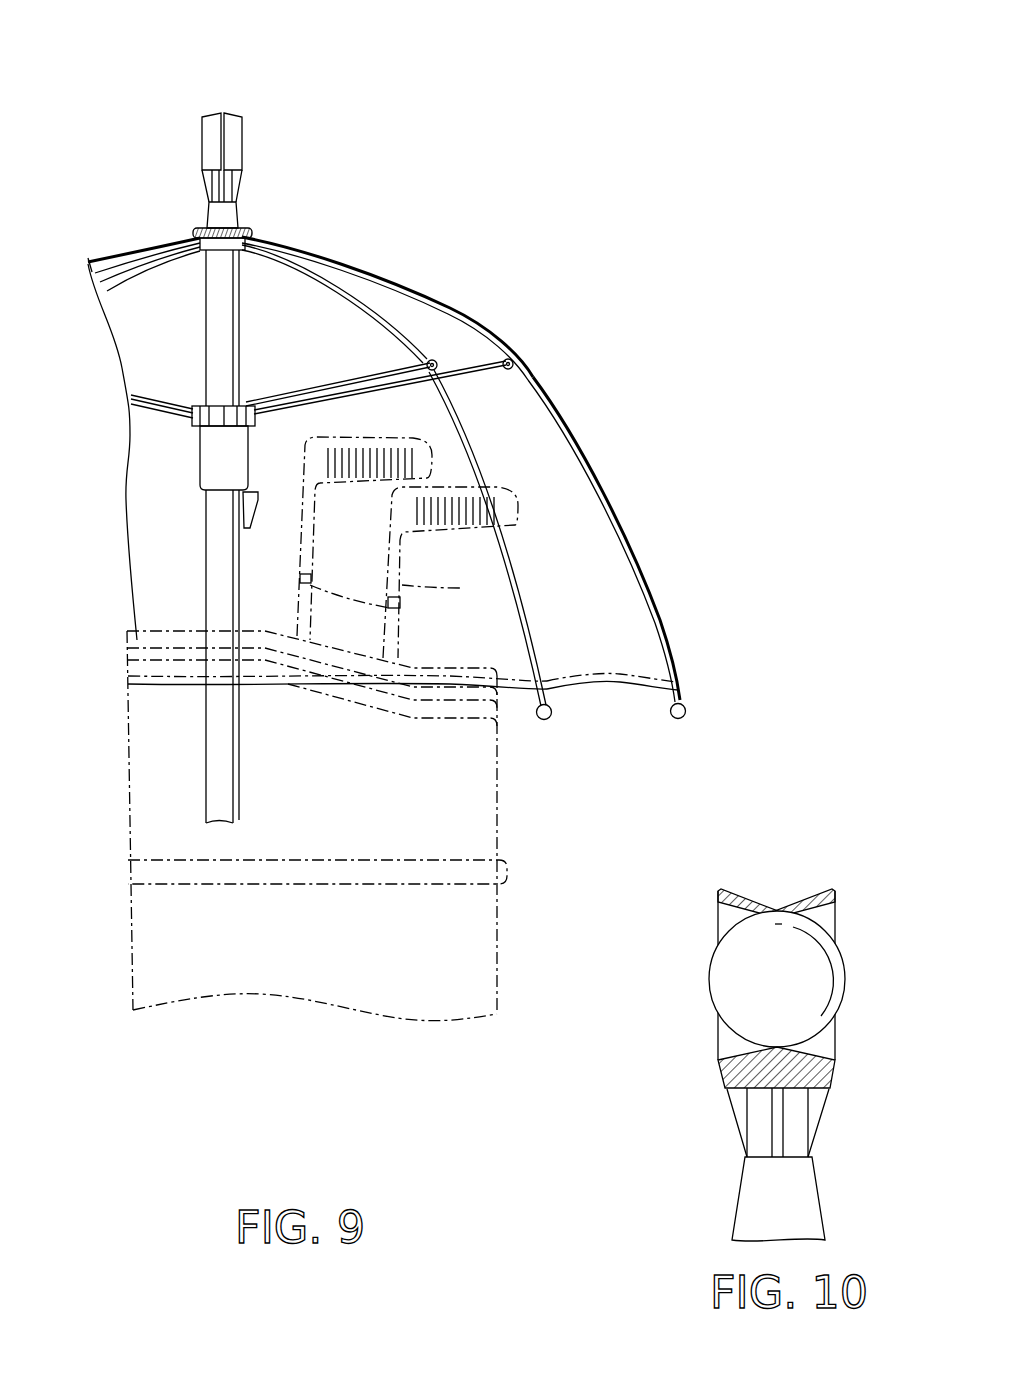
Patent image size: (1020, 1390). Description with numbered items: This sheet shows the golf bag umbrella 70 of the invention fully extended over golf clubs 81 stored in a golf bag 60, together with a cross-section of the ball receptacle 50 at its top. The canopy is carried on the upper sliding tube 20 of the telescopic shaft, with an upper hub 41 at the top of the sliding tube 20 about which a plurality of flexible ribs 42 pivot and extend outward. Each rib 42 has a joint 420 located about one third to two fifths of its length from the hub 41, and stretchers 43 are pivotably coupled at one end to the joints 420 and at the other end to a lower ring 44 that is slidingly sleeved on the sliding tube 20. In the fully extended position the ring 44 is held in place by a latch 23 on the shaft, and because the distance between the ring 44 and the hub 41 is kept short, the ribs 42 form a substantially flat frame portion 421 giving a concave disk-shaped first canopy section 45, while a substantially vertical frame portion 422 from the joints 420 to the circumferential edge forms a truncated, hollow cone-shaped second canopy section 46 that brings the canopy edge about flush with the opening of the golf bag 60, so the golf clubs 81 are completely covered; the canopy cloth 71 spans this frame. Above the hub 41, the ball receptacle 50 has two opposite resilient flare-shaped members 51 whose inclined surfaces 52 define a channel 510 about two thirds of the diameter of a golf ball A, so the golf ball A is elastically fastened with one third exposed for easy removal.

In FIG. 9, the upper sliding tube 20 is at (220, 793).
In FIG. 9, the latch 23 is at (250, 508).
In FIG. 9, the upper hub 41 is at (232, 238).
In FIG. 9, the flexible ribs 42 is at (491, 448).
In FIG. 9, the stretchers 43 is at (403, 386).
In FIG. 9, the lower ring 44 is at (215, 413).
In FIG. 9, the first canopy section 45 is at (295, 290).
In FIG. 9, the second canopy section 46 is at (597, 586).
In FIG. 9, the ball receptacle 50 is at (240, 88).
In FIG. 10, the ball receptacle 50 is at (768, 1011).
In FIG. 9, the flare-shaped members 51 is at (212, 126).
In FIG. 10, the flare-shaped members 51 is at (740, 888).
In FIG. 10, the inclined surface 52 is at (826, 906).
In FIG. 9, the golf bag 60 is at (512, 822).
In FIG. 9, the umbrella 70 is at (518, 198).
In FIG. 9, the arms 71 is at (154, 368).
In FIG. 9, the golf clubs 81 is at (390, 608).
In FIG. 9, the joint 420 is at (516, 358).
In FIG. 9, the flat frame portion 421 is at (393, 282).
In FIG. 9, the vertical frame portion 422 is at (596, 487).
In FIG. 10, the channel 510 is at (829, 1042).
In FIG. 10, the golf ball A is at (717, 993).